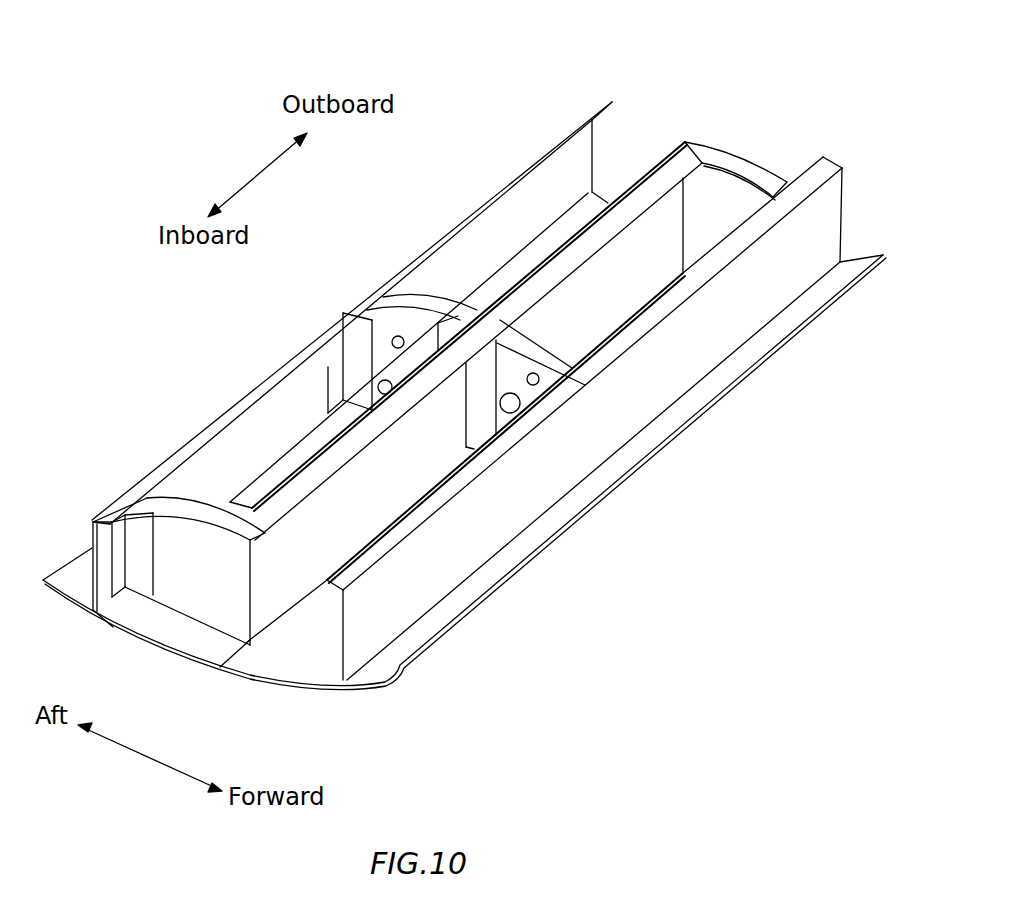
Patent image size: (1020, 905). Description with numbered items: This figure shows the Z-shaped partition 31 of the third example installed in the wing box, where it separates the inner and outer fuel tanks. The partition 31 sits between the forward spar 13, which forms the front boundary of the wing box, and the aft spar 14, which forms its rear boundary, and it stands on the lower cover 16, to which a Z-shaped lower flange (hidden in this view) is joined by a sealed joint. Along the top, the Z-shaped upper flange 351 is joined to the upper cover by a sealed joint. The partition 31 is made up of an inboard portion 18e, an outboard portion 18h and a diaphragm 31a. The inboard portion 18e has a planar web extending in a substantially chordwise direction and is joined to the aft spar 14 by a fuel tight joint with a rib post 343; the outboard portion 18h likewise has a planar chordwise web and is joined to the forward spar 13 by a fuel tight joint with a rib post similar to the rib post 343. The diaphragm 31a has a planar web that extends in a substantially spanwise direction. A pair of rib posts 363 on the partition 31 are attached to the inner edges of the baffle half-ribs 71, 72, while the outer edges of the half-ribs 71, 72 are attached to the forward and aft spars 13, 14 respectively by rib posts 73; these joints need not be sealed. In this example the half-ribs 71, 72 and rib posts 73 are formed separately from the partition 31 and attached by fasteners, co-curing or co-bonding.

The forward spar 13 is at (478, 528).
The aft spar 14 is at (262, 426).
The lower cover 16 is at (140, 646).
The inboard portion 18e is at (202, 572).
The outboard portion 18h is at (720, 212).
The Z-shaped partition 31 is at (512, 222).
The diaphragm 31a is at (278, 572).
The rib post 343 is at (137, 523).
The Z-shaped upper flange 351 is at (702, 157).
The rib posts 363 is at (482, 395).
The baffle half-rib 71 is at (537, 392).
The baffle half-rib 72 is at (413, 337).
The rib posts 73 is at (360, 347).